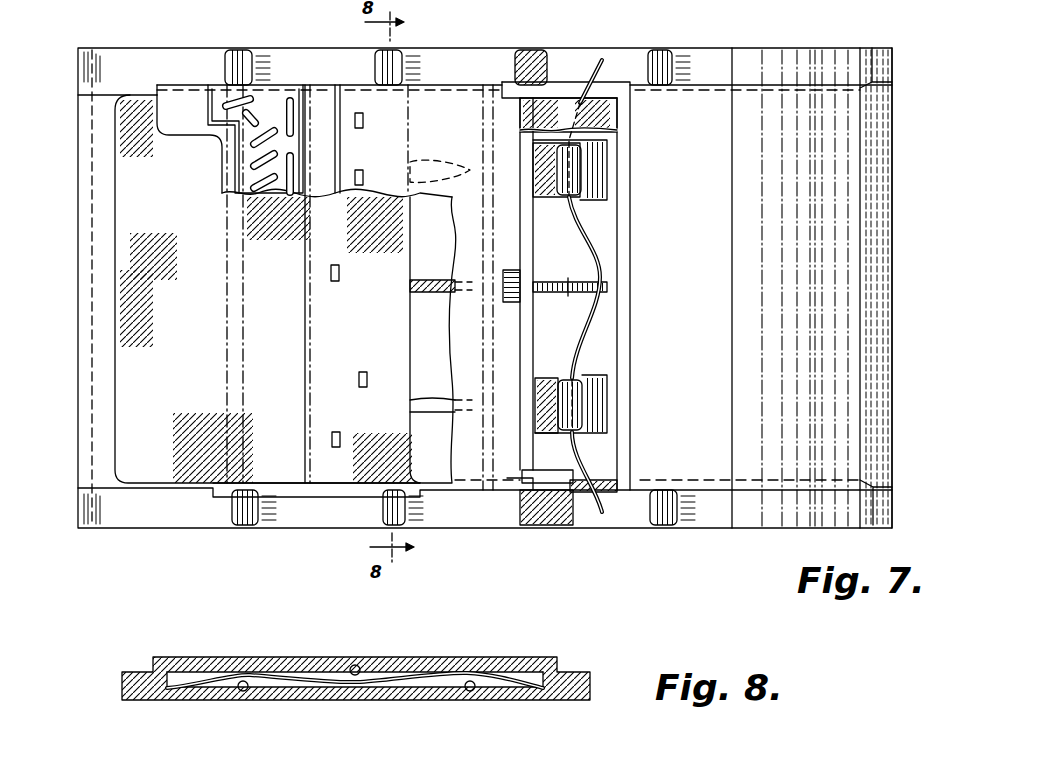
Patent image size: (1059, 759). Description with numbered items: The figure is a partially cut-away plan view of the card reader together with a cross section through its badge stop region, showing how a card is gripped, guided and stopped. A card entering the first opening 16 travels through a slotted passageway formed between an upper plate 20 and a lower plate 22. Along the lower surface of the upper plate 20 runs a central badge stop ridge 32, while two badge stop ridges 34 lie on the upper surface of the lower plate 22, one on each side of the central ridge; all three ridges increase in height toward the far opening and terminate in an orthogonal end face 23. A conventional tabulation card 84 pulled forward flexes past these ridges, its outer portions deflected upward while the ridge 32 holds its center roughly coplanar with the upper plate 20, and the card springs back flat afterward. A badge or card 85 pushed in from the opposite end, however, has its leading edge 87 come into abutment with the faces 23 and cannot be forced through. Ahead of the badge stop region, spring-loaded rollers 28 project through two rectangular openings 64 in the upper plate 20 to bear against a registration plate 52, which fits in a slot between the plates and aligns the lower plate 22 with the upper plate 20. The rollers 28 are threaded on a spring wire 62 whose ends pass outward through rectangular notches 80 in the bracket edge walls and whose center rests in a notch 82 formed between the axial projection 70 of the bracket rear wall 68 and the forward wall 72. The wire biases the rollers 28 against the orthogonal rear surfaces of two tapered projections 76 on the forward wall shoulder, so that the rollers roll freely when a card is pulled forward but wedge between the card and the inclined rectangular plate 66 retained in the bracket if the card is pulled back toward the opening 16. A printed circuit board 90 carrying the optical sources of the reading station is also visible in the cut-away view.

In FIG. 7, the first opening 16 is at (877, 135).
In FIG. 8, the upper plate 20 is at (520, 657).
In FIG. 8, the lower plate 22 is at (518, 700).
In FIG. 7, the end face 23 is at (408, 282).
In FIG. 7, the roller 28 is at (573, 177).
In FIG. 7, the badge stop ridge 32 is at (437, 279).
In FIG. 8, the badge stop ridge 32 is at (357, 665).
In FIG. 7, the badge stop ridge 34 is at (437, 165).
In FIG. 8, the badge stop ridge 34 is at (243, 691).
In FIG. 7, the registration plate 52 is at (567, 510).
In FIG. 7, the spring wire 62 is at (597, 62).
In FIG. 7, the rectangular opening 64 is at (547, 187).
In FIG. 7, the rectangular plate 66 is at (600, 115).
In FIG. 7, the rear wall 68 is at (518, 243).
In FIG. 7, the axial projection 70 is at (568, 278).
In FIG. 7, the forward wall 72 is at (623, 243).
In FIG. 7, the tapered projection 76 is at (592, 200).
In FIG. 7, the rectangular notch 80 is at (597, 480).
In FIG. 7, the notch 82 is at (607, 282).
In FIG. 8, the card 84 is at (410, 672).
In FIG. 7, the badge or card 85 is at (408, 348).
In FIG. 7, the leading edge 87 is at (410, 243).
In FIG. 7, the printed circuit board 90 is at (283, 163).